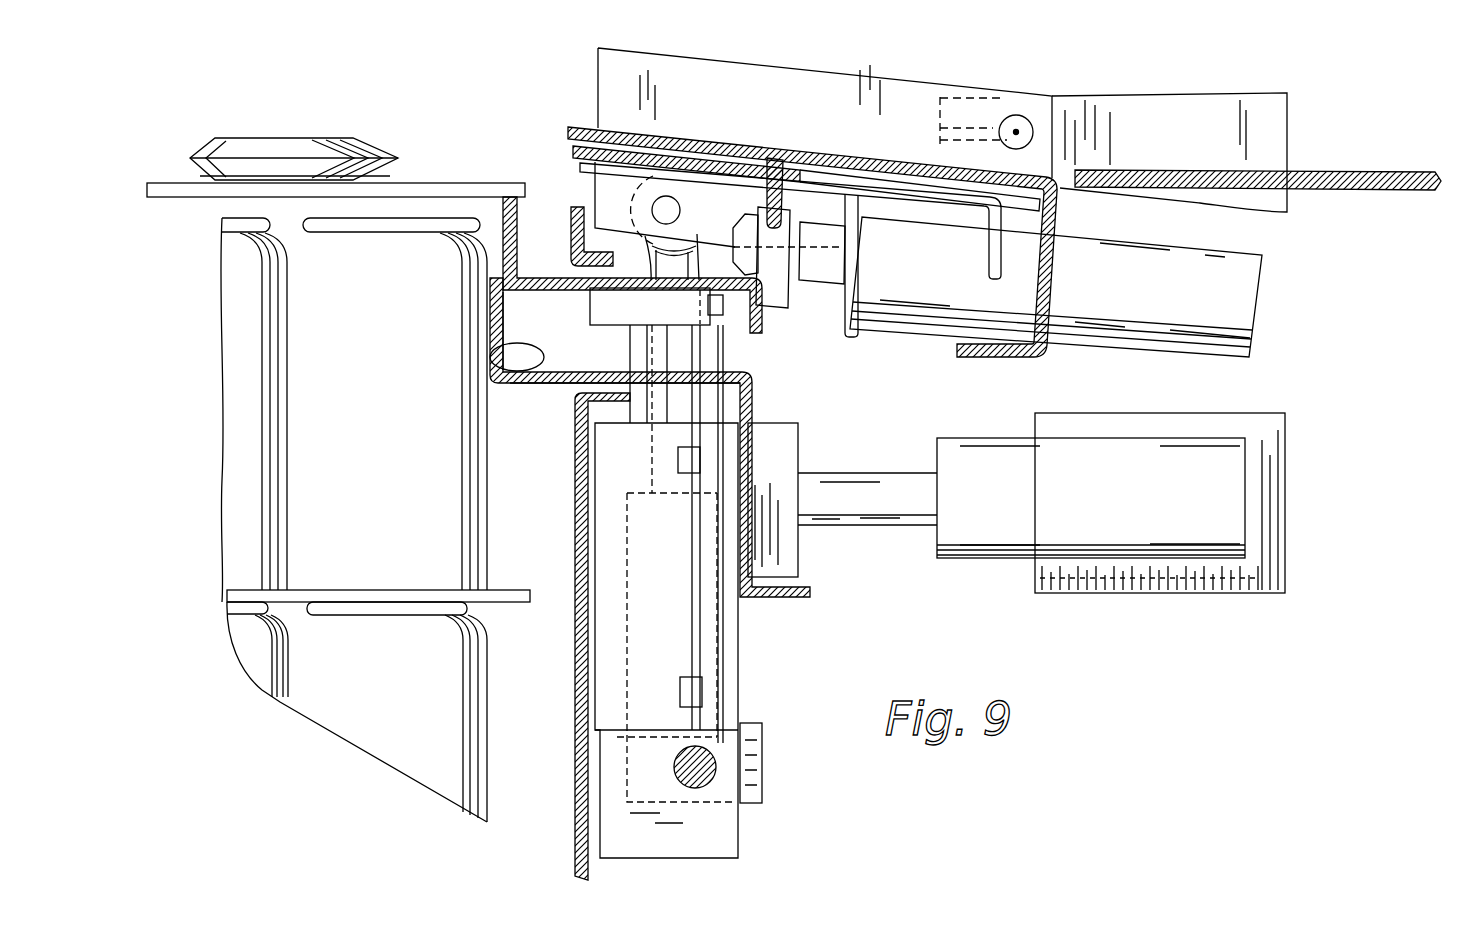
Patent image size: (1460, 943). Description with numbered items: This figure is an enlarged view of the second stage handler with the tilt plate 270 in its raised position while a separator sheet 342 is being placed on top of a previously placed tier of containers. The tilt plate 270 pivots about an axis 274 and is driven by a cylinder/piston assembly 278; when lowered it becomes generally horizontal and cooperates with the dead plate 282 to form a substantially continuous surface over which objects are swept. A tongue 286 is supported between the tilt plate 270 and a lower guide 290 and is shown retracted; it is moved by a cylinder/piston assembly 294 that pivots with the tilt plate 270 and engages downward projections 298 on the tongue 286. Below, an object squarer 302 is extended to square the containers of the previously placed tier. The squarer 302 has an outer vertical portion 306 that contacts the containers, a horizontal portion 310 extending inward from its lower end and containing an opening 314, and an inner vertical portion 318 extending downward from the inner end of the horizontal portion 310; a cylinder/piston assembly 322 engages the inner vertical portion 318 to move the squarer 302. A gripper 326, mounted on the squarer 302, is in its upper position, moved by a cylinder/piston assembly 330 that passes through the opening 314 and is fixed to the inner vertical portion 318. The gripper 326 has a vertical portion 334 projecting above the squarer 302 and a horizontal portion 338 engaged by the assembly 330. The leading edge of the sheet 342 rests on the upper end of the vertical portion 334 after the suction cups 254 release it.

The suction cups 254 is at (340, 138).
The tilt plate 270 is at (742, 140).
The axis 274 is at (1016, 132).
The cylinder/piston assemblies 278 is at (683, 362).
The dead plate 282 is at (1396, 170).
The tongue 286 is at (572, 150).
The lower guide 290 is at (582, 169).
The cylinder/piston assemblies 294 is at (1167, 296).
The downward projections 298 is at (767, 199).
The object squarer 302 is at (592, 437).
The outer vertical portion 306 is at (503, 307).
The horizontal portion 310 is at (625, 358).
The opening 314 is at (491, 349).
The inner vertical portion 318 is at (752, 497).
The cylinder/piston assemblies 322 is at (1133, 504).
The gripper 326 is at (492, 242).
The cylinder/piston assemblies 330 is at (613, 623).
The vertical portion 334 is at (515, 224).
The horizontal portion 338 is at (656, 306).
The separator sheet 342 is at (160, 183).